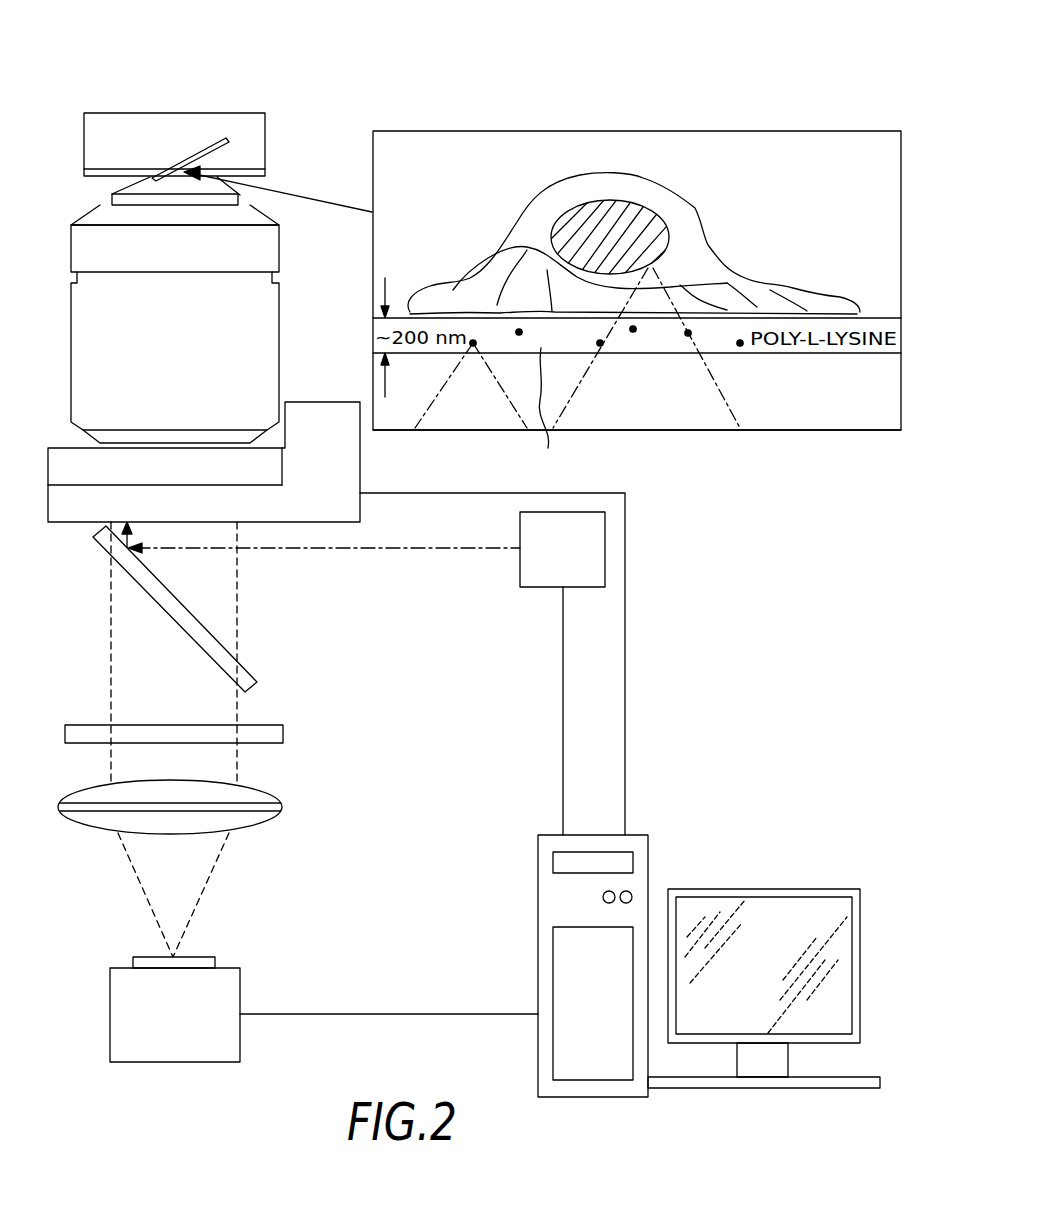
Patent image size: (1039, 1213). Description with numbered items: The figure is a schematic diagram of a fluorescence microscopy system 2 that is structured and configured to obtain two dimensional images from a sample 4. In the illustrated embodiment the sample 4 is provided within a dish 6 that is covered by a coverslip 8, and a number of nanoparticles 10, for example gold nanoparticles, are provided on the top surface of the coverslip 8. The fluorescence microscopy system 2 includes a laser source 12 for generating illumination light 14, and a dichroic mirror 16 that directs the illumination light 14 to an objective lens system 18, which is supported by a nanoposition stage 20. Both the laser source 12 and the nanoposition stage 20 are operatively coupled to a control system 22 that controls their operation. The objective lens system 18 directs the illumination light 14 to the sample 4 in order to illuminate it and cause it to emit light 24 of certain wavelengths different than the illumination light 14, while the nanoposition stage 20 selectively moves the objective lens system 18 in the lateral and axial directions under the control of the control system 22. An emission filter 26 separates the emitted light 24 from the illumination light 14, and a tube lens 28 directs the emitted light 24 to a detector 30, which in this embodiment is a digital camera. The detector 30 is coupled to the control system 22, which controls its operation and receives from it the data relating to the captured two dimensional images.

The fluorescence microscopy system 2 is at (642, 108).
The sample 4 is at (683, 194).
The dish 6 is at (765, 142).
The coverslip 8 is at (843, 422).
The nanoparticles 10 is at (473, 348).
The laser source 12 is at (533, 588).
The illumination light 14 is at (442, 550).
The dichroic mirror 16 is at (178, 630).
The objective lens system 18 is at (70, 330).
The nanoposition stage 20 is at (48, 468).
The control system 22 is at (736, 868).
The emitted light 24 is at (133, 698).
The emission filter 26 is at (271, 723).
The tube lens 28 is at (259, 820).
The detector 30 is at (241, 990).